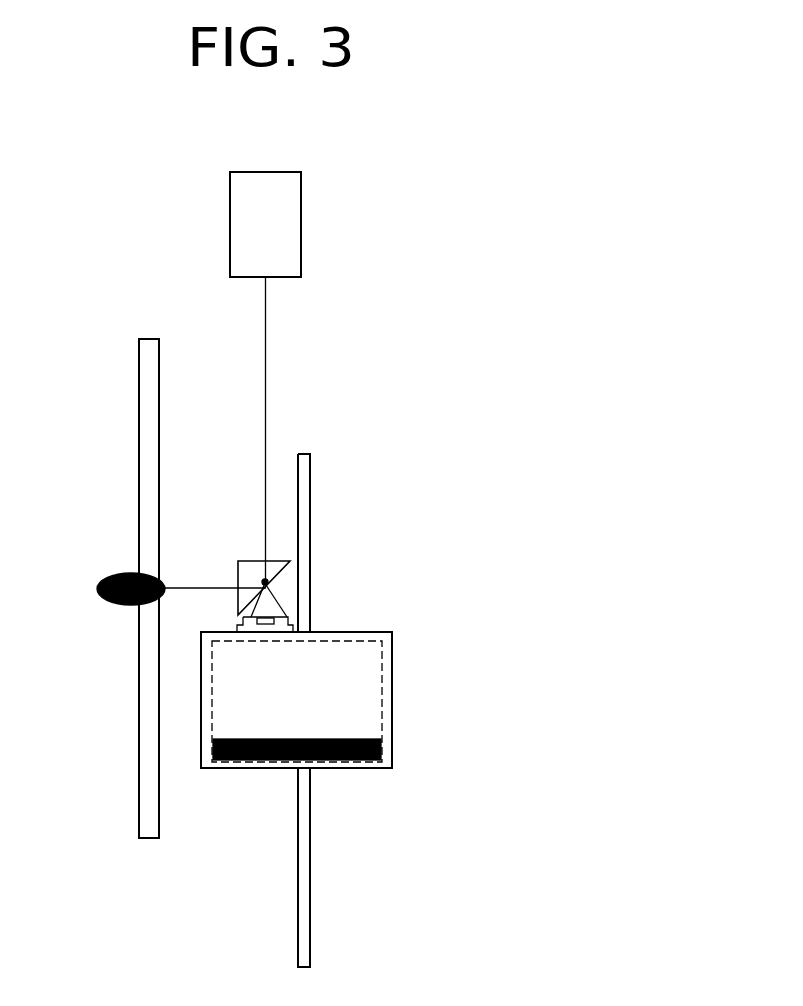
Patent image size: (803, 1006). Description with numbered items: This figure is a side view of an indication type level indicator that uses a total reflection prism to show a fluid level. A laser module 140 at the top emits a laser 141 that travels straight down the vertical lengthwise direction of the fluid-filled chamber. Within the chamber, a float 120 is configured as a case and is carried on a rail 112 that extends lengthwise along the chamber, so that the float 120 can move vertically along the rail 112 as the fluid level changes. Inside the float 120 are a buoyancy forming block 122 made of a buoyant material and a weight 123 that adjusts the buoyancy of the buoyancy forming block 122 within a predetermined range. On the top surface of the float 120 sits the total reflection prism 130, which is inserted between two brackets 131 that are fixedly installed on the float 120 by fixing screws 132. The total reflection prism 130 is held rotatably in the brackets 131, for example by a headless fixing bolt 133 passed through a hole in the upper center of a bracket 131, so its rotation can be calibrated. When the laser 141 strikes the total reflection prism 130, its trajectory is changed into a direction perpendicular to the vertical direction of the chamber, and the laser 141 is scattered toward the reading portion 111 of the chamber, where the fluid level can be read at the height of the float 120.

The reading portion 111 is at (139, 396).
The rail 112 is at (310, 512).
The float 120 is at (368, 768).
The buoyancy forming block 122 is at (382, 703).
The weight 123 is at (248, 762).
The total reflection prism 130 is at (290, 566).
The bracket 131 is at (262, 607).
The fixing screw 132 is at (265, 625).
The fixing bolt 133 is at (262, 579).
The laser module 140 is at (304, 243).
The laser 141 is at (267, 373).